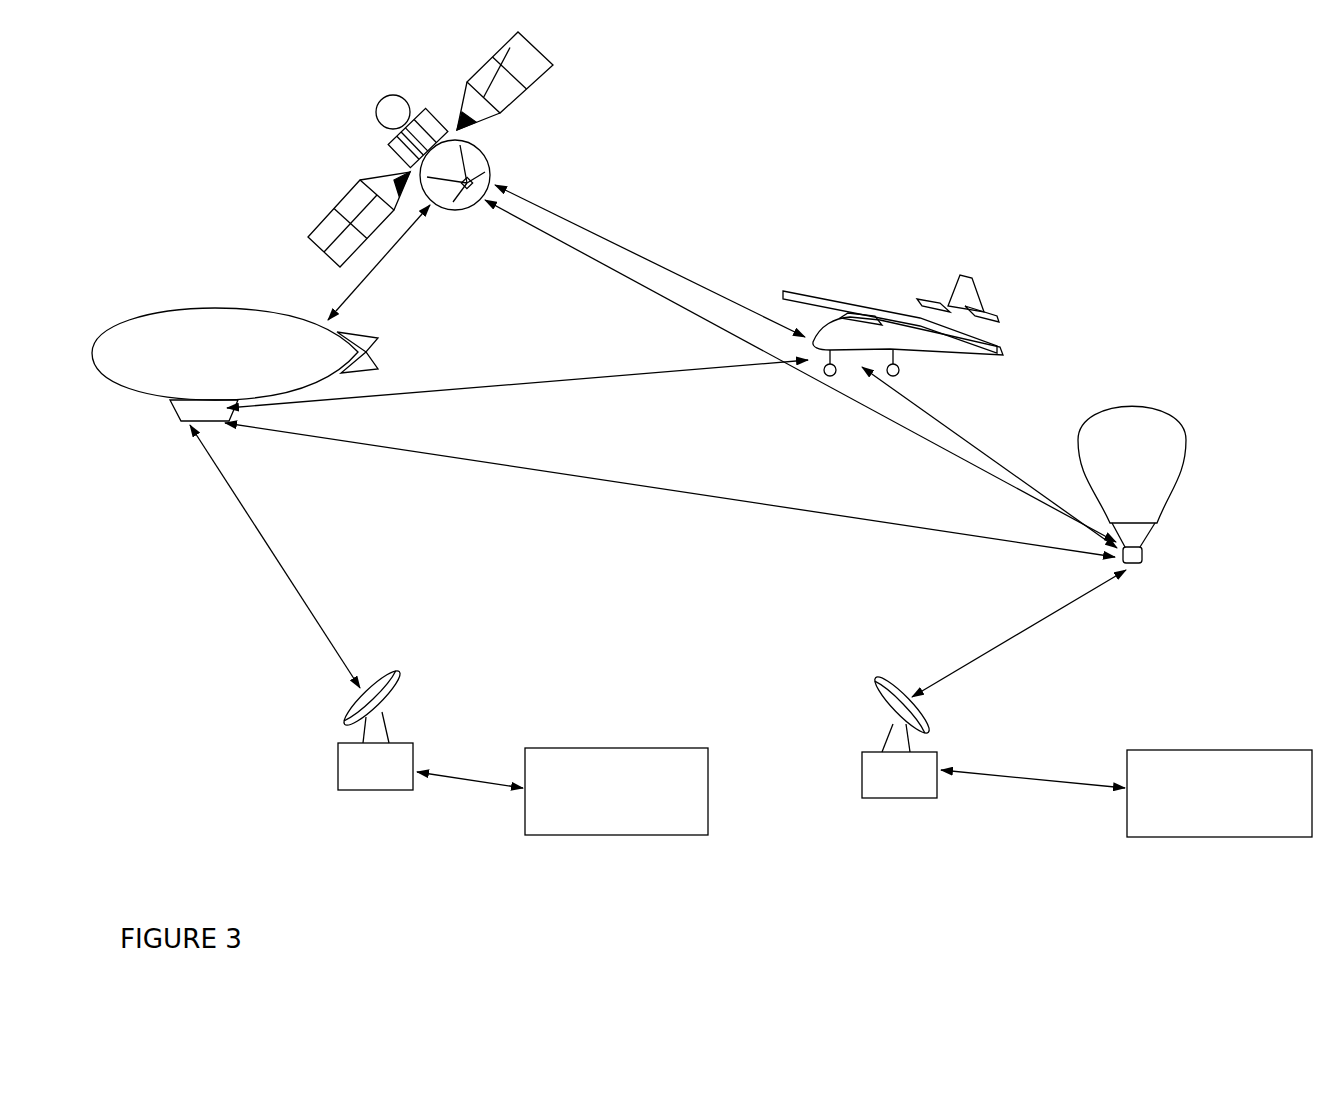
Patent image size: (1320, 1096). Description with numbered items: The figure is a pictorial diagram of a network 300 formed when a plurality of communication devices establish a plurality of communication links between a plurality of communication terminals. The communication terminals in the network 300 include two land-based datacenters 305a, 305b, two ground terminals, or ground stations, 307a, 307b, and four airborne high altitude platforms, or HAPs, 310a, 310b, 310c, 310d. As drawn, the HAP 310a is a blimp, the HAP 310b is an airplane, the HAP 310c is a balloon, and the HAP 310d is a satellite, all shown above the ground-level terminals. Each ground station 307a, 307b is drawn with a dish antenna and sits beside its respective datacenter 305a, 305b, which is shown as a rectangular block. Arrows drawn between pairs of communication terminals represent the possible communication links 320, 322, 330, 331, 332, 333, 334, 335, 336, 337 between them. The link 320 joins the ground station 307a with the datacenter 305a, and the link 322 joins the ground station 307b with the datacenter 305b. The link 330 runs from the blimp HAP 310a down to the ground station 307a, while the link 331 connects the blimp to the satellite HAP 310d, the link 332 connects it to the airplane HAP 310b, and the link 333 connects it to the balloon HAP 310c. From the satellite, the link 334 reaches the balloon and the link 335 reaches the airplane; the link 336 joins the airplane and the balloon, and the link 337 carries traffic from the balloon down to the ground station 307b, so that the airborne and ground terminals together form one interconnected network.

The network 300 is at (200, 913).
The high altitude platform (blimp) 310a is at (215, 320).
The high altitude platform (airplane) 310b is at (857, 307).
The high altitude platform (balloon) 310c is at (1143, 425).
The high altitude platform (satellite) 310d is at (375, 113).
The ground station 307a is at (375, 727).
The ground station 307b is at (899, 734).
The land-based datacenter 305a is at (616, 791).
The land-based datacenter 305b is at (1219, 793).
The communication link 320 is at (470, 791).
The communication link 322 is at (1033, 792).
The communication link 330 is at (275, 556).
The communication link 331 is at (379, 262).
The communication link 332 is at (517, 387).
The communication link 333 is at (670, 490).
The communication link 334 is at (800, 371).
The communication link 335 is at (650, 261).
The communication link 336 is at (989, 457).
The communication link 337 is at (1019, 633).